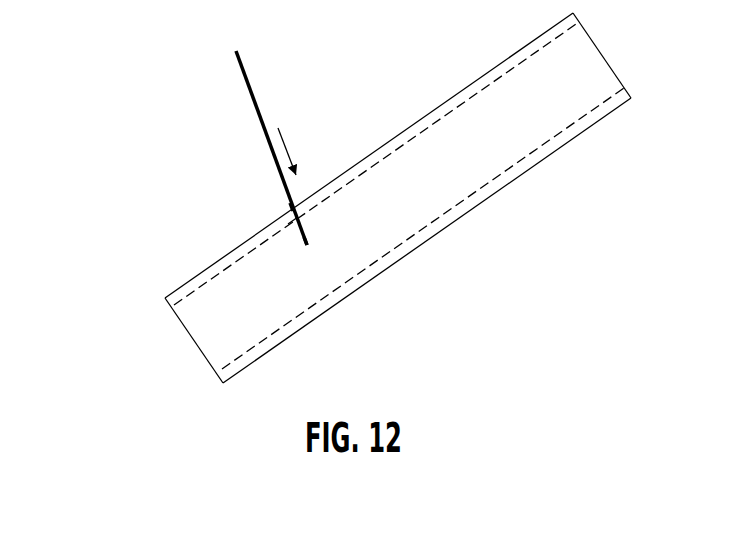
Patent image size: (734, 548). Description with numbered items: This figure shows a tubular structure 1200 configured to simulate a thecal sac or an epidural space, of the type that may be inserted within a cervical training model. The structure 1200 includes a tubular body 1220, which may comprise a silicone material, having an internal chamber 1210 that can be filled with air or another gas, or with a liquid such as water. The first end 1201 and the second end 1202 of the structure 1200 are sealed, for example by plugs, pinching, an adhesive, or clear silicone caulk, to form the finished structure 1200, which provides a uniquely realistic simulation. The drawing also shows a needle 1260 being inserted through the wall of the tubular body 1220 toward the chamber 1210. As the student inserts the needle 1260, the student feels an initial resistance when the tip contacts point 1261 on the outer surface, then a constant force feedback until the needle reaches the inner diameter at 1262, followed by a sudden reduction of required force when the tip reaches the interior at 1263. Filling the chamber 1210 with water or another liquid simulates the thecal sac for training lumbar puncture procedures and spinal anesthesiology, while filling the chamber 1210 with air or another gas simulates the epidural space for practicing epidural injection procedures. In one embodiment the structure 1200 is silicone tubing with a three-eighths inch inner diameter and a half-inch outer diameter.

The structure 1200 is at (395, 198).
The first end 1201 is at (193, 340).
The second end 1202 is at (603, 53).
The internal chamber 1210 is at (430, 199).
The tubular body 1220 is at (405, 252).
The needle 1260 is at (257, 98).
The point 1261 is at (291, 206).
The inner diameter 1262 is at (293, 220).
The interior 1263 is at (303, 245).